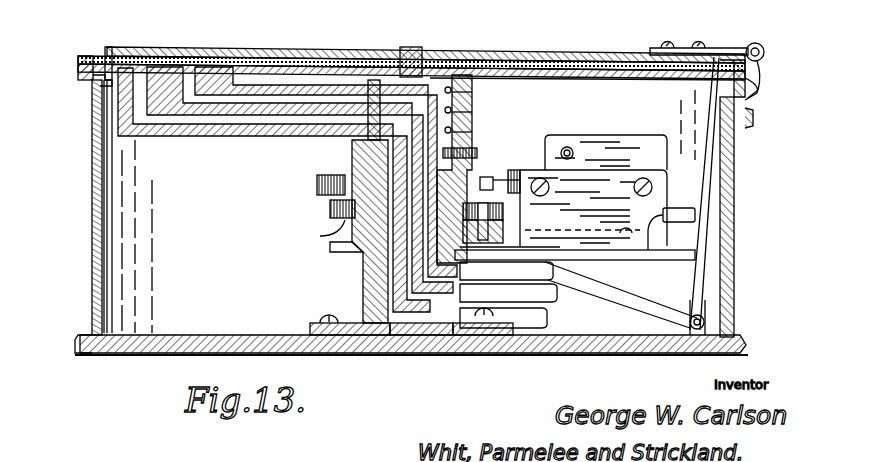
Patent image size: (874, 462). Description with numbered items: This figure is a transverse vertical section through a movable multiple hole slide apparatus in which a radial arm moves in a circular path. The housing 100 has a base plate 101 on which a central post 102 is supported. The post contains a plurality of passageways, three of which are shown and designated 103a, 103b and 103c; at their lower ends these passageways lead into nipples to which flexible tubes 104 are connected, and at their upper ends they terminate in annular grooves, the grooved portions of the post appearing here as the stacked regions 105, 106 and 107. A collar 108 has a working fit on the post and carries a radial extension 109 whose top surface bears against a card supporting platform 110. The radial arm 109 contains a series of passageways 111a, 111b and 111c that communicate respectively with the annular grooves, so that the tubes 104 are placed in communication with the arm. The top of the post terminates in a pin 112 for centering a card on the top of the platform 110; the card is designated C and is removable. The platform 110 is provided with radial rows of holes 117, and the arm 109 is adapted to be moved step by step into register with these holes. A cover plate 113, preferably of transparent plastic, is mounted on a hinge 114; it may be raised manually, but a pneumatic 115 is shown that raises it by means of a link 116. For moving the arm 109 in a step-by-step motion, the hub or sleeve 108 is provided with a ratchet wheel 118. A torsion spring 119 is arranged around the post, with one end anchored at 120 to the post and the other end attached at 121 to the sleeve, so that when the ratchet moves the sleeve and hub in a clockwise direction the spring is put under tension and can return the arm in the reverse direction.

The housing 100 is at (92, 250).
The base plate 101 is at (498, 347).
The central post 102 is at (362, 277).
The passageway 103a is at (424, 337).
The passageway 103b is at (428, 315).
The passageway 103c is at (458, 322).
The flexible tubes 104 is at (553, 270).
The insulating block 105 is at (458, 90).
The insulating block 106 is at (458, 110).
The insulating block 107 is at (458, 130).
The collar 108 is at (352, 148).
The radial extension 109 is at (190, 137).
The card supporting platform 110 is at (638, 74).
The passageway 111a is at (313, 100).
The passageway 111b is at (343, 127).
The passageway 111c is at (452, 45).
The pin 112 is at (417, 53).
The cover plate 113 is at (118, 48).
The hinge 114 is at (760, 44).
The pneumatic 115 is at (660, 292).
The link 116 is at (705, 220).
The holes 117 is at (593, 190).
The ratchet wheel 118 is at (486, 180).
The torsion spring 119 is at (343, 228).
The anchor point 120 is at (497, 233).
The attachment point 121 is at (333, 198).
The card C is at (518, 68).